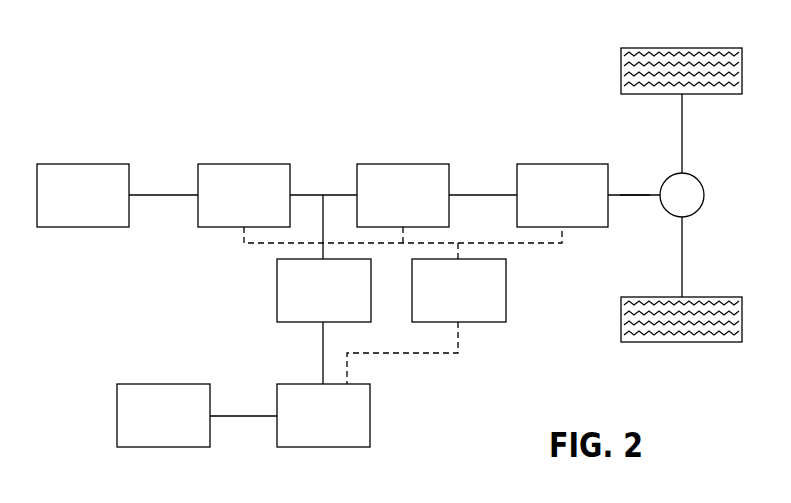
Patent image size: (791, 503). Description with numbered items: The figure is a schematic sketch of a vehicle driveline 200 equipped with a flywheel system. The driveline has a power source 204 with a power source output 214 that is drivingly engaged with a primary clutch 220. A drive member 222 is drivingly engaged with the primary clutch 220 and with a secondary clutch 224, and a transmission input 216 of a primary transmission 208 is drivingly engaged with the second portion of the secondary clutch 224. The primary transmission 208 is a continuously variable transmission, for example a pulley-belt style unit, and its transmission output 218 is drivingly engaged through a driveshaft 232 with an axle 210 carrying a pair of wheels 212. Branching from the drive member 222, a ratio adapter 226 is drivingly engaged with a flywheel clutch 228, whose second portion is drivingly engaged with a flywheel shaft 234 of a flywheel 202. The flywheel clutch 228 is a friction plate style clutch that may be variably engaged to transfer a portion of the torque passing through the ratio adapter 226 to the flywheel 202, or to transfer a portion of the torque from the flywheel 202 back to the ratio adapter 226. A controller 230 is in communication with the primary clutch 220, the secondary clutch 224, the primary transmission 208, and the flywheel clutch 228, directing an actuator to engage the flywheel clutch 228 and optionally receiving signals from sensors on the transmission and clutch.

The vehicle driveline 200 is at (172, 70).
The flywheel 202 is at (117, 416).
The power source 204 is at (82, 163).
The primary transmission 208 is at (562, 163).
The axle 210 is at (682, 258).
The wheels 212 is at (682, 48).
The power source output 214 is at (164, 194).
The transmission input 216 is at (516, 194).
The transmission output 218 is at (609, 193).
The primary clutch 220 is at (242, 163).
The drive member 222 is at (306, 194).
The secondary clutch 224 is at (402, 163).
The ratio adapter 226 is at (277, 290).
The flywheel clutch 228 is at (370, 416).
The controller 230 is at (506, 288).
The driveshaft 232 is at (635, 197).
The flywheel shaft 234 is at (244, 418).